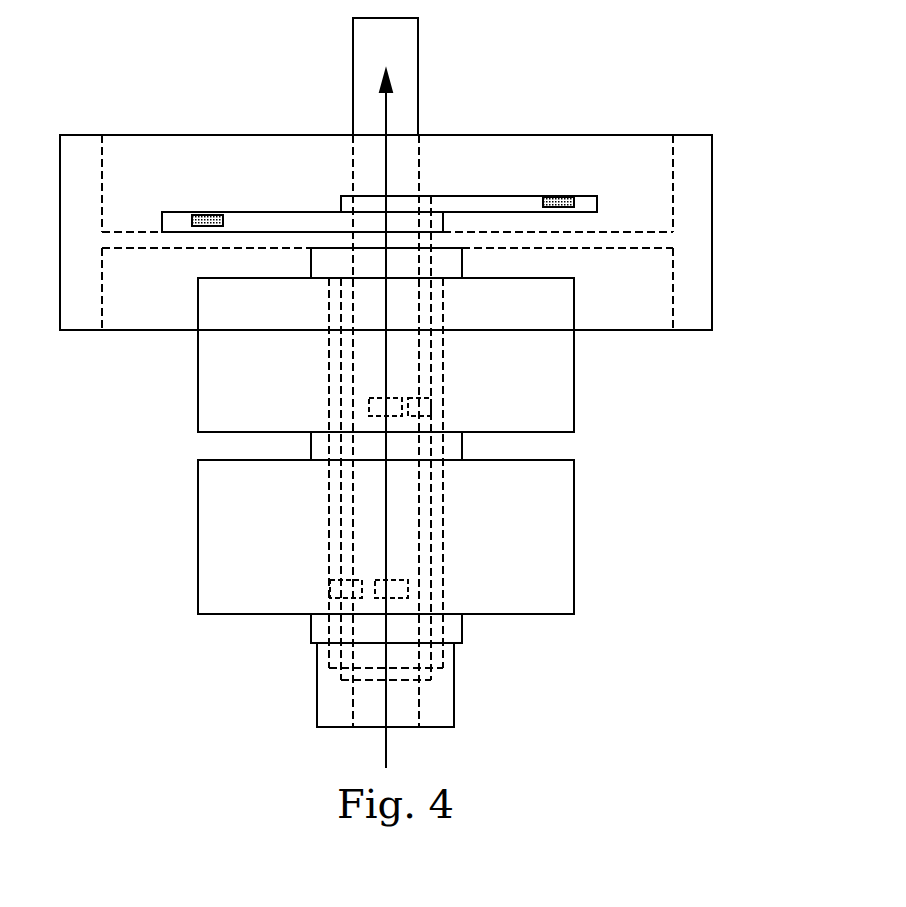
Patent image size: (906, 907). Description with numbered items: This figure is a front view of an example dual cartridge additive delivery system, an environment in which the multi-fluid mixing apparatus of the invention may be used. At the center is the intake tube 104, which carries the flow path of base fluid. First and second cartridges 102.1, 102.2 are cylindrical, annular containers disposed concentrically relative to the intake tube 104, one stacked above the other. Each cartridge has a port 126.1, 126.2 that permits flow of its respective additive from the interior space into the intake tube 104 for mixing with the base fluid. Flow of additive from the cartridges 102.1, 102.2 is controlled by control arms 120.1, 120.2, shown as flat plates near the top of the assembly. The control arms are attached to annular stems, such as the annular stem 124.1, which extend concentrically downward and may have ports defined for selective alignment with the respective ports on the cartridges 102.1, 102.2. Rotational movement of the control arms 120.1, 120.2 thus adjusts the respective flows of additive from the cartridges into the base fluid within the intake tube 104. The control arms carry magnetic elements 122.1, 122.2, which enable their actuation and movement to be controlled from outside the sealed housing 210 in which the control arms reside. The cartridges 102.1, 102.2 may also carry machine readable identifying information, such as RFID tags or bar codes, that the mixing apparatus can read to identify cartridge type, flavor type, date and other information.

The sealed housing 210 is at (700, 232).
The control arm 120.1 is at (470, 196).
The control arm 120.2 is at (297, 212).
The magnetic element 122.1 is at (558, 197).
The magnetic element 122.2 is at (211, 214).
The annular stem 124.1 is at (432, 369).
The first cartridge 102.1 is at (562, 535).
The second cartridge 102.2 is at (562, 372).
The port 126.1 is at (330, 591).
The port 126.2 is at (368, 407).
The intake tube 104 is at (442, 694).